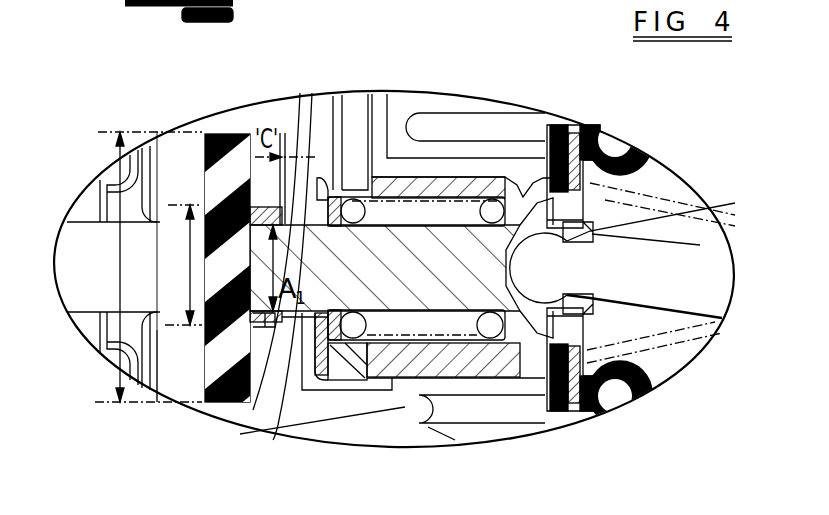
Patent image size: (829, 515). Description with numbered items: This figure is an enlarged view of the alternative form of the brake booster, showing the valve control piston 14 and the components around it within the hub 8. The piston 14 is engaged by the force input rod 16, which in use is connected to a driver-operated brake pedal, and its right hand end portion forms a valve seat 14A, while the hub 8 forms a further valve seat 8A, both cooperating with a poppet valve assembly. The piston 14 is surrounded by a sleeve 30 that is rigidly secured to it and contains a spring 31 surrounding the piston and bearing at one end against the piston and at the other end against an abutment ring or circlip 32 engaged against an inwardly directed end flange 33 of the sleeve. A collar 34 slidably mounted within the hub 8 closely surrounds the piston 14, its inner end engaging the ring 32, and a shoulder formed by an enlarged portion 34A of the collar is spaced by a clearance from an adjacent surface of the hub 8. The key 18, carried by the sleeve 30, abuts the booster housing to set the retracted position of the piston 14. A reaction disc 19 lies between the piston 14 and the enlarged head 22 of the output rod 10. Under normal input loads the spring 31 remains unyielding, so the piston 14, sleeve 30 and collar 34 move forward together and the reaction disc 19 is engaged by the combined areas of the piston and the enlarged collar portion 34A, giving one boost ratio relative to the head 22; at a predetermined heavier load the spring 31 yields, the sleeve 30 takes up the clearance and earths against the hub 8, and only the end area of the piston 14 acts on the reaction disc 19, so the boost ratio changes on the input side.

The hub 8 is at (213, 122).
The further valve seat 8A is at (537, 153).
The output rod 10 is at (90, 224).
The valve control piston 14 is at (273, 437).
The valve seat 14A is at (540, 420).
The force input rod 16 is at (692, 240).
The key 18 is at (352, 108).
The reaction disc 19 is at (197, 372).
The enlarged head 22 is at (175, 148).
The sleeve 30 is at (432, 187).
The spring 31 is at (494, 203).
The abutment ring or circlip 32 is at (333, 100).
The inwardly directed end flange 33 is at (318, 150).
The collar 34 is at (277, 110).
The enlarged portion of the collar 34A is at (248, 410).